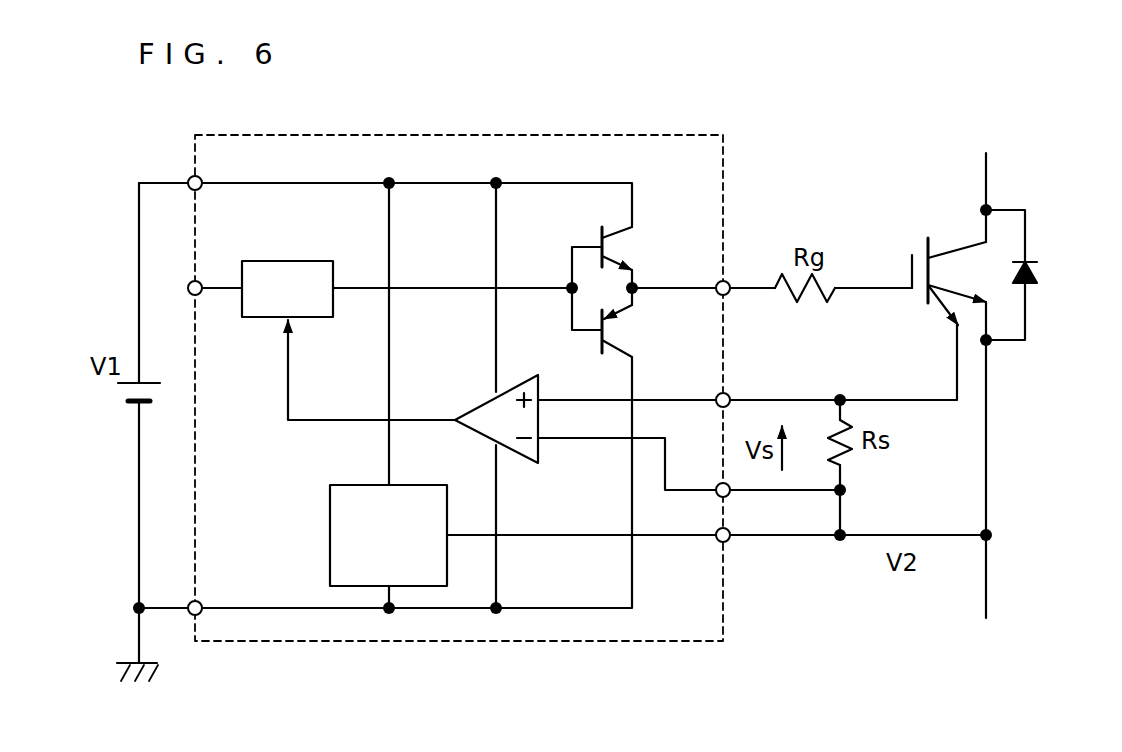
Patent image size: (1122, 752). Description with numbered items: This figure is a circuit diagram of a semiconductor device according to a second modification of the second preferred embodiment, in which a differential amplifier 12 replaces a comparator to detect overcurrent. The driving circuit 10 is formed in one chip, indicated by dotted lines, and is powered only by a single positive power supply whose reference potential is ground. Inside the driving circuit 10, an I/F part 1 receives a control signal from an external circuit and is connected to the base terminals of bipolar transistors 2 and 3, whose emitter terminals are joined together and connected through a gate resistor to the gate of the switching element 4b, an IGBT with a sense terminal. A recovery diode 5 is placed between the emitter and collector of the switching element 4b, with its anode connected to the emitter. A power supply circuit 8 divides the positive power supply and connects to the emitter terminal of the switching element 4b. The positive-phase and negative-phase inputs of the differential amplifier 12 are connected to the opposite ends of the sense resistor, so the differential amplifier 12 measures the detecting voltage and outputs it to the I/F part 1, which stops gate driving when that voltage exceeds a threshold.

The I/F part 1 is at (314, 261).
The bipolar transistor 2 is at (626, 243).
The bipolar transistor 3 is at (626, 330).
The switching element 4b is at (925, 240).
The recovery diode 5 is at (1040, 272).
The power supply circuit 8 is at (350, 485).
The driving circuit 10 is at (480, 643).
The differential amplifier 12 is at (522, 375).